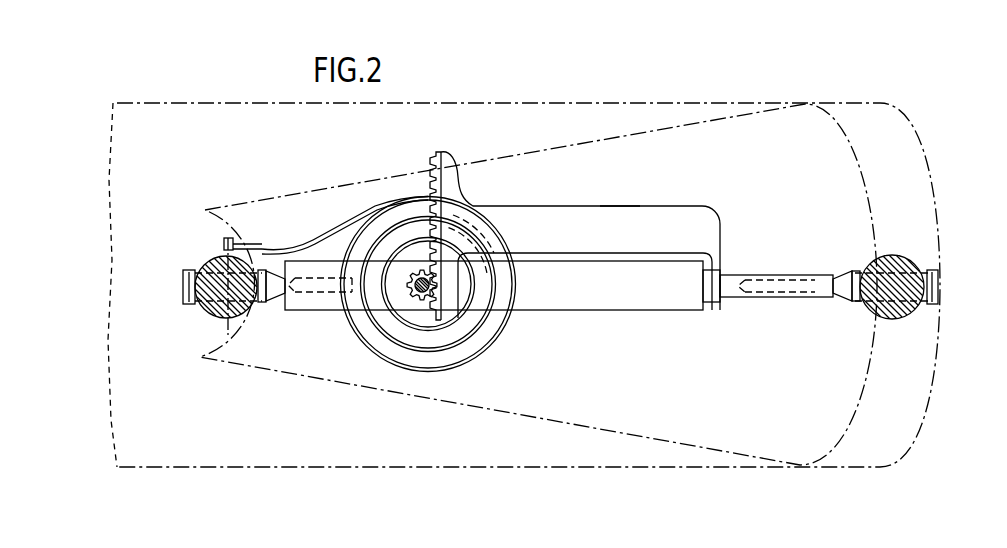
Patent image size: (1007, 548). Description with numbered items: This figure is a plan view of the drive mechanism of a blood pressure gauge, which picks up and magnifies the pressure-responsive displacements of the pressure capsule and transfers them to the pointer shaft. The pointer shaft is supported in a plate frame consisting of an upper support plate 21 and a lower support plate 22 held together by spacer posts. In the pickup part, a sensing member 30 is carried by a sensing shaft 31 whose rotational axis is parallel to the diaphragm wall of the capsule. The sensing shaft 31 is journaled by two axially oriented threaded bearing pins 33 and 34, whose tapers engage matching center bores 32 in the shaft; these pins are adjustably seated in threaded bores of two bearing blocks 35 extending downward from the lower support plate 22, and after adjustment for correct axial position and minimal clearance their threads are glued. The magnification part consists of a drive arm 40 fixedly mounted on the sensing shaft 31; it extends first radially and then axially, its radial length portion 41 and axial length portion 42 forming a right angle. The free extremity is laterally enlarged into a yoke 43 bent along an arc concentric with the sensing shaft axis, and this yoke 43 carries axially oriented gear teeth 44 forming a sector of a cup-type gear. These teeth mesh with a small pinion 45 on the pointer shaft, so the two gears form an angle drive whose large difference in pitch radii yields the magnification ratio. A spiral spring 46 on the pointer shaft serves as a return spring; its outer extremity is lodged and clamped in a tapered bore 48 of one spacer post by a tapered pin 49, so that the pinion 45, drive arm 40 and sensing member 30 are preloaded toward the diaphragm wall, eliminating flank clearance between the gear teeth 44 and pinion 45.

The upper support plate 21 is at (229, 104).
The lower support plate 22 is at (745, 130).
The sensing member 30 is at (411, 226).
The sensing shaft 31 is at (610, 300).
The center bores 32 is at (319, 300).
The threaded bearing pin 33 is at (195, 280).
The threaded bearing pin 34 is at (278, 300).
The bearing blocks 35 is at (215, 300).
The drive arm 40 is at (633, 205).
The radial length portion 41 is at (720, 272).
The axial length portion 42 is at (560, 232).
The yoke 43 is at (452, 188).
The gear teeth 44 is at (433, 154).
The pinion 45 is at (410, 303).
The spiral spring 46 is at (351, 206).
The tapered bore 48 is at (210, 246).
The tapered pin 49 is at (224, 243).